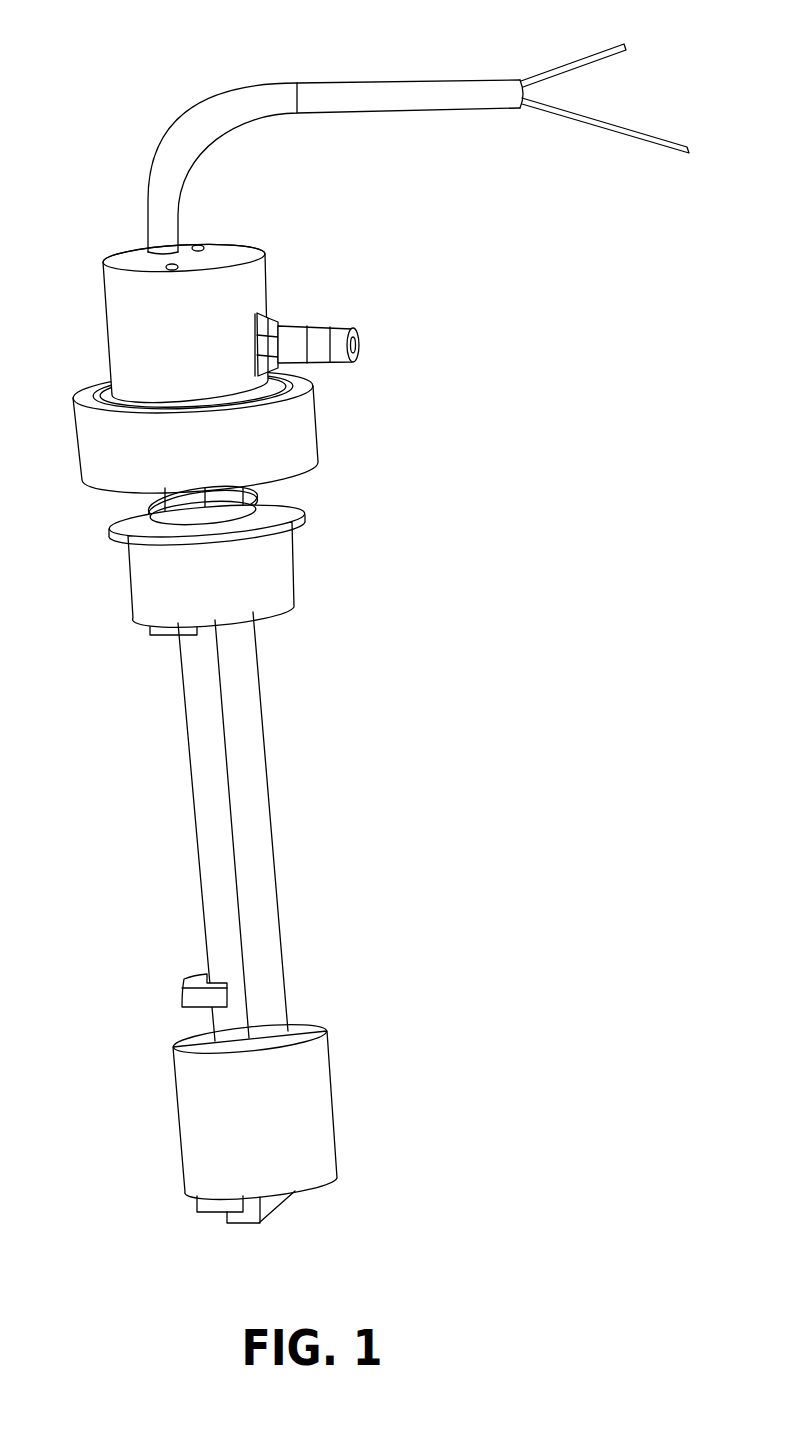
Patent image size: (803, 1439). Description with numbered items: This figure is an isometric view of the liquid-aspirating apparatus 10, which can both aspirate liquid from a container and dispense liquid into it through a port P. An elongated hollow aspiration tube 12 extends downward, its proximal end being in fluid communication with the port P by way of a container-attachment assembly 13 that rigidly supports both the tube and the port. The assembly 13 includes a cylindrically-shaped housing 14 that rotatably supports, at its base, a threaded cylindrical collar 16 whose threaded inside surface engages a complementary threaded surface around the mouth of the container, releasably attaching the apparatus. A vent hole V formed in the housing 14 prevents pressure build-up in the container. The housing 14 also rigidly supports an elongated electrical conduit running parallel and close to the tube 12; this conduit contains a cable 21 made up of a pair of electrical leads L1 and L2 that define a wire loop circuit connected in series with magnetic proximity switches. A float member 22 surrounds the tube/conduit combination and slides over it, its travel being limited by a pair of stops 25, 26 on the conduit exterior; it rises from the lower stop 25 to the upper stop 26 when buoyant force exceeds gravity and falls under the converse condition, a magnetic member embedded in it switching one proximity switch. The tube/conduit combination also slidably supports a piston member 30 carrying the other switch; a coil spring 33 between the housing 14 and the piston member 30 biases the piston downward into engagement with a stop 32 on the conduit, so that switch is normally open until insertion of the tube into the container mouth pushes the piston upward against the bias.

The liquid-aspirating apparatus 10 is at (355, 522).
The aspiration tube 12 is at (255, 802).
The container-attachment assembly 13 is at (324, 344).
The housing 14 is at (252, 287).
The threaded cylindrical collar 16 is at (303, 432).
The cable 21 is at (358, 102).
The float member 22 is at (244, 1132).
The stop 25 is at (207, 1207).
The stop 26 is at (188, 997).
The piston member 30 is at (199, 597).
The stop 32 is at (158, 630).
The coil spring 33 is at (148, 502).
The electrical lead L1 is at (578, 60).
The electrical lead L2 is at (577, 120).
The port P is at (340, 363).
The vent hole V is at (200, 245).